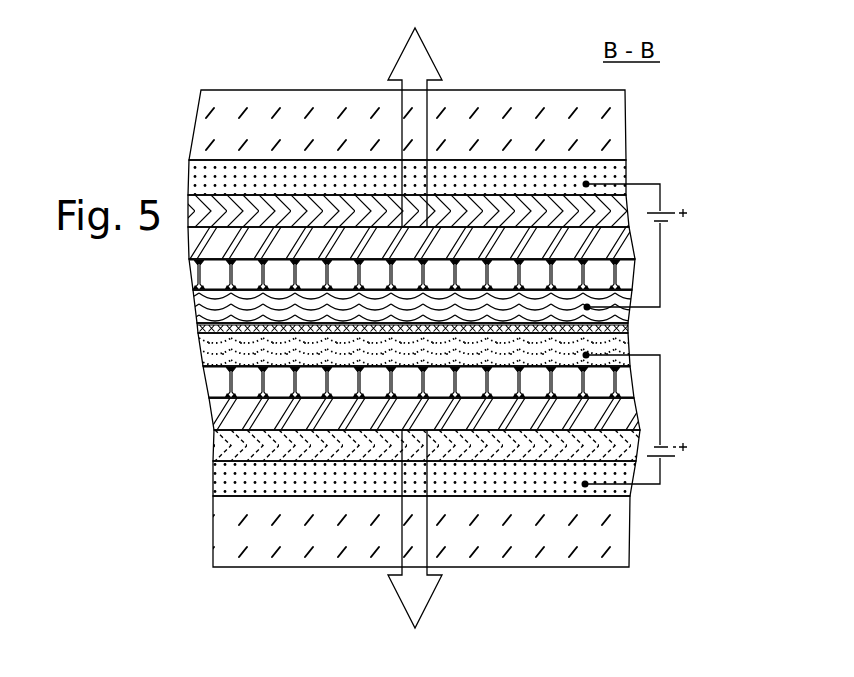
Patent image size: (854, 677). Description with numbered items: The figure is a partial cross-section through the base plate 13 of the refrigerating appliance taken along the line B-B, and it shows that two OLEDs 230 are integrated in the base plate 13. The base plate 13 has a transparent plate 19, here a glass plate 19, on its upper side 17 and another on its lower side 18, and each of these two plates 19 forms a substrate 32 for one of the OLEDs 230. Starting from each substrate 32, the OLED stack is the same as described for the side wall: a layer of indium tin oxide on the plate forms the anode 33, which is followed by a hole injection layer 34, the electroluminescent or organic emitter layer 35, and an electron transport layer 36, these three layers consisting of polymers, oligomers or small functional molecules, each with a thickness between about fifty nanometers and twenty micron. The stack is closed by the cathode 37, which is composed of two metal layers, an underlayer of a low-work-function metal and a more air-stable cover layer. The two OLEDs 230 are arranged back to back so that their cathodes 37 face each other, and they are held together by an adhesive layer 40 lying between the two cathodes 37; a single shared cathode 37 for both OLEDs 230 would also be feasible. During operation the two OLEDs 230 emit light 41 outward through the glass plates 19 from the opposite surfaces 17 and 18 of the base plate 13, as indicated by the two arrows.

The base plate 13 is at (433, 319).
The OLED 230 is at (408, 331).
The upper side 17 is at (507, 90).
The lower side 18 is at (524, 569).
The transparent plate 19 is at (362, 319).
The substrate 32 is at (341, 319).
The anode 33 is at (344, 479).
The hole injection layer 34 is at (250, 446).
The electroluminescent layer 35 is at (245, 415).
The electron transport layer 36 is at (240, 380).
The cathode 37 is at (220, 355).
The adhesive layer 40 is at (340, 316).
The light 41 is at (408, 62).